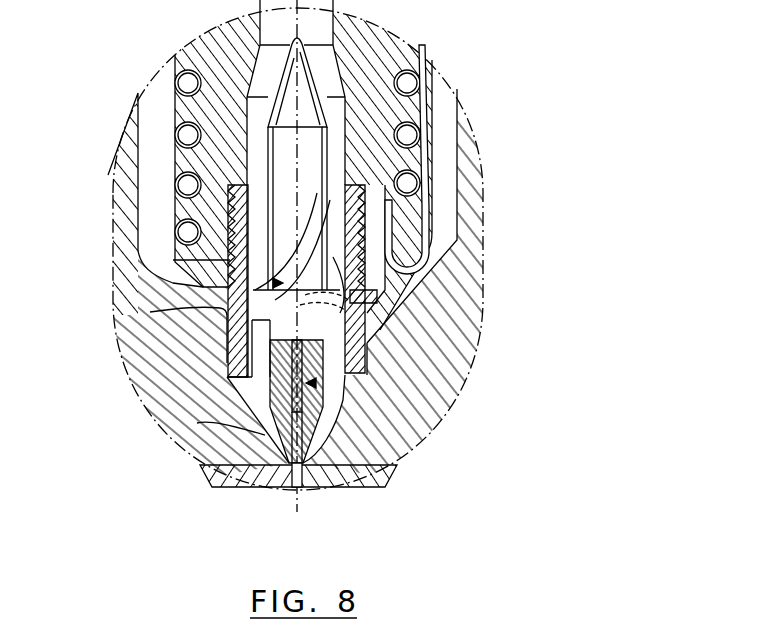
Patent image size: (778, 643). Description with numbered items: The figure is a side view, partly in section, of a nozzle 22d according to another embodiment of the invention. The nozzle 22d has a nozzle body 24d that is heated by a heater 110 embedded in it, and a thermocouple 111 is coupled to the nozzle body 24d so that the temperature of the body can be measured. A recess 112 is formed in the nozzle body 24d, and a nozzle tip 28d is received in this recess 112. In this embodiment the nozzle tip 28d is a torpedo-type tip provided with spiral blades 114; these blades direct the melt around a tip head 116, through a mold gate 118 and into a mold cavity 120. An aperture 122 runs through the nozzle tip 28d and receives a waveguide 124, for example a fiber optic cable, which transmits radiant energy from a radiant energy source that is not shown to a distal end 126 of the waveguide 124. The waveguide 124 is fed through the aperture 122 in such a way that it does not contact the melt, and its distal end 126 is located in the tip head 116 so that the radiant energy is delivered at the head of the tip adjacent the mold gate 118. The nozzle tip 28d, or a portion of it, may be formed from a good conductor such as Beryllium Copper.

The nozzle 22d is at (527, 82).
The nozzle body 24d is at (197, 110).
The heater 110 is at (175, 197).
The recess 112 is at (228, 262).
The spiral blades 114 is at (150, 312).
The nozzle tip 28d is at (226, 368).
The thermocouple 111 is at (428, 174).
The aperture 122 is at (380, 338).
The waveguide 124 is at (316, 384).
The tip head 116 is at (312, 431).
The mold gate 118 is at (320, 488).
The mold cavity 120 is at (273, 493).
The distal end 126 is at (197, 423).